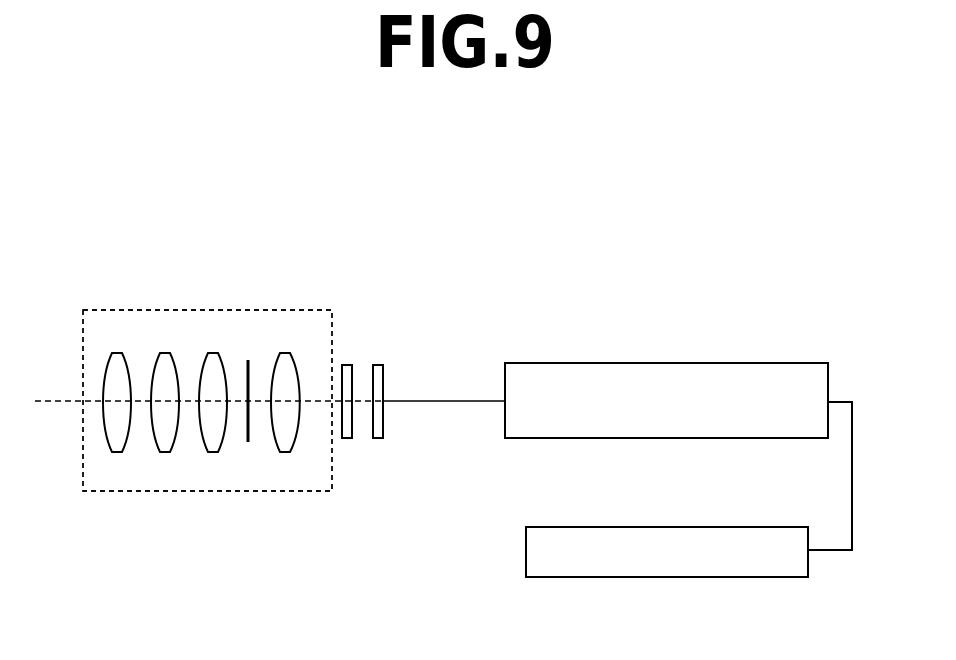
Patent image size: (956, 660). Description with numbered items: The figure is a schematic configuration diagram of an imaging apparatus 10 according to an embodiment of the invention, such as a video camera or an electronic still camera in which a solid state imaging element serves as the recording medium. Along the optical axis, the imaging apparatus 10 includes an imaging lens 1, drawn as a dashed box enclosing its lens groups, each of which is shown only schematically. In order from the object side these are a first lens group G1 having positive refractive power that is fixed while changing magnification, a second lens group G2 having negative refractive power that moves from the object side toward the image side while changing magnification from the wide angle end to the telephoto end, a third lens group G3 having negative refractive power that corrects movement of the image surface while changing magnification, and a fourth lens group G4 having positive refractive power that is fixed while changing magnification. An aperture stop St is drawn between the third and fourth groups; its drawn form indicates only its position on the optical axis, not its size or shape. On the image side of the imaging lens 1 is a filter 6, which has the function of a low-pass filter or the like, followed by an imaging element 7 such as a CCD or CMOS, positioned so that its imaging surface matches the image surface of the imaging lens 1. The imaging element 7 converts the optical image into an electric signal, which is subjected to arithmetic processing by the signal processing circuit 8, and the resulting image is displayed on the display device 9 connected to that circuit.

The imaging apparatus 10 is at (345, 181).
The imaging lens 1 is at (247, 310).
The first lens group G1 is at (115, 457).
The second lens group G2 is at (165, 457).
The third lens group G3 is at (213, 457).
The fourth lens group G4 is at (285, 457).
The aperture stop St is at (248, 443).
The filter 6 is at (347, 365).
The imaging element 7 is at (378, 365).
The signal processing circuit 8 is at (763, 363).
The display device 9 is at (763, 527).